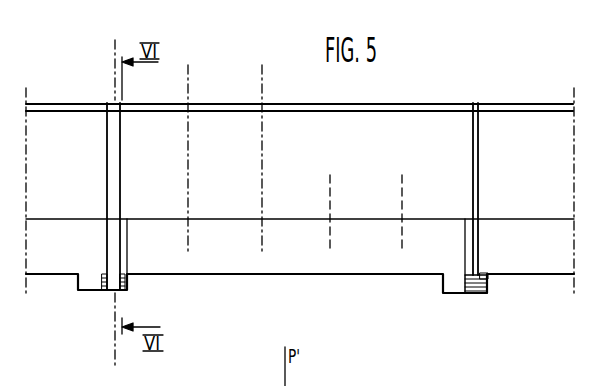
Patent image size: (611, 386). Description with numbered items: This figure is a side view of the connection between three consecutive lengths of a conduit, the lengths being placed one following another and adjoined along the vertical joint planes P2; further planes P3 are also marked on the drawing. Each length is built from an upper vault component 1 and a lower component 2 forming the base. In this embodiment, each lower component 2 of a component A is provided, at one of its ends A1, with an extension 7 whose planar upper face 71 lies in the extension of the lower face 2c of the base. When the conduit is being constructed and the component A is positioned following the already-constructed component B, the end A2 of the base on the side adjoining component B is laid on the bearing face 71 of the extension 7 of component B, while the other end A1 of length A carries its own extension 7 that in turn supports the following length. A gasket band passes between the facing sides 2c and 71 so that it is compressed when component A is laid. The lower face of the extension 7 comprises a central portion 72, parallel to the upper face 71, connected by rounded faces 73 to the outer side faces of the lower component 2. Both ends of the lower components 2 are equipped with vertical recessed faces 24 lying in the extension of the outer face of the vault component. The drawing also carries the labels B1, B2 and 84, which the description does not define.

The upper component 1 is at (402, 147).
The lower component 2 is at (438, 233).
The lower face of the base 2c is at (393, 274).
The extension 7 is at (487, 280).
The vertical recessed faces 24 is at (473, 243).
The upper face of the extension 71 is at (483, 273).
The central portion 72 is at (473, 293).
The rounded faces 73 is at (481, 292).
The element 84 is at (277, 383).
The component A is at (240, 127).
The end of component A1 is at (462, 130).
The end of the base A2 is at (122, 262).
The component B is at (67, 123).
The panel B1 is at (99, 258).
The panel B2 is at (483, 127).
The vertical joint planes P2 is at (118, 200).
The plane P3 is at (228, 147).